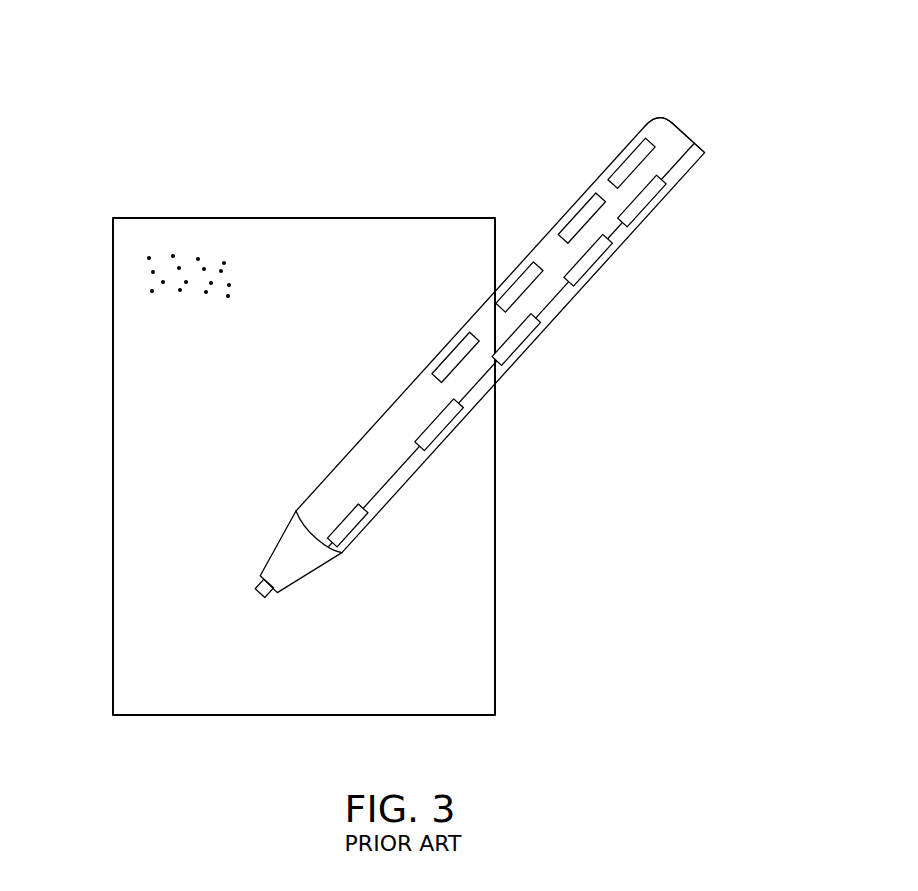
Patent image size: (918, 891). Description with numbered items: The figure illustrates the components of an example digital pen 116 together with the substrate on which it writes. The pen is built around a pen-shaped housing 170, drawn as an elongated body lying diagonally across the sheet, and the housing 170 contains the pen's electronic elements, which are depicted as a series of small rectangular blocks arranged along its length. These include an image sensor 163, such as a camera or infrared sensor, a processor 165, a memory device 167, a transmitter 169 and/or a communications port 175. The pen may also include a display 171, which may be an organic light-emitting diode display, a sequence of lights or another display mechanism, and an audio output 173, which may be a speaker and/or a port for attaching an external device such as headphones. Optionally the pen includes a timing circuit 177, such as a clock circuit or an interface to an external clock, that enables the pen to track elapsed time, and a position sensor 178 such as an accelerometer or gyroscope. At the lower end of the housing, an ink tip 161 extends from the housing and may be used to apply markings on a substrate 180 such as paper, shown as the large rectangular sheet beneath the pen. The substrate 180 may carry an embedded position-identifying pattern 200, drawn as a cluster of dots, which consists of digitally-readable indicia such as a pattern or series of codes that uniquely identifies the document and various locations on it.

The digital pen 116 is at (507, 339).
The ink tip 161 is at (273, 598).
The image sensor 163 is at (358, 524).
The processor 165 is at (452, 420).
The memory device 167 is at (532, 334).
The transmitter 169 is at (660, 193).
The pen-shaped housing 170 is at (703, 151).
The display 171 is at (586, 202).
The audio output 173 is at (523, 271).
The communications port 175 is at (636, 146).
The timing circuit 177 is at (602, 256).
The position sensor 178 is at (455, 346).
The substrate 180 is at (113, 683).
The position-identifying pattern 200 is at (188, 235).